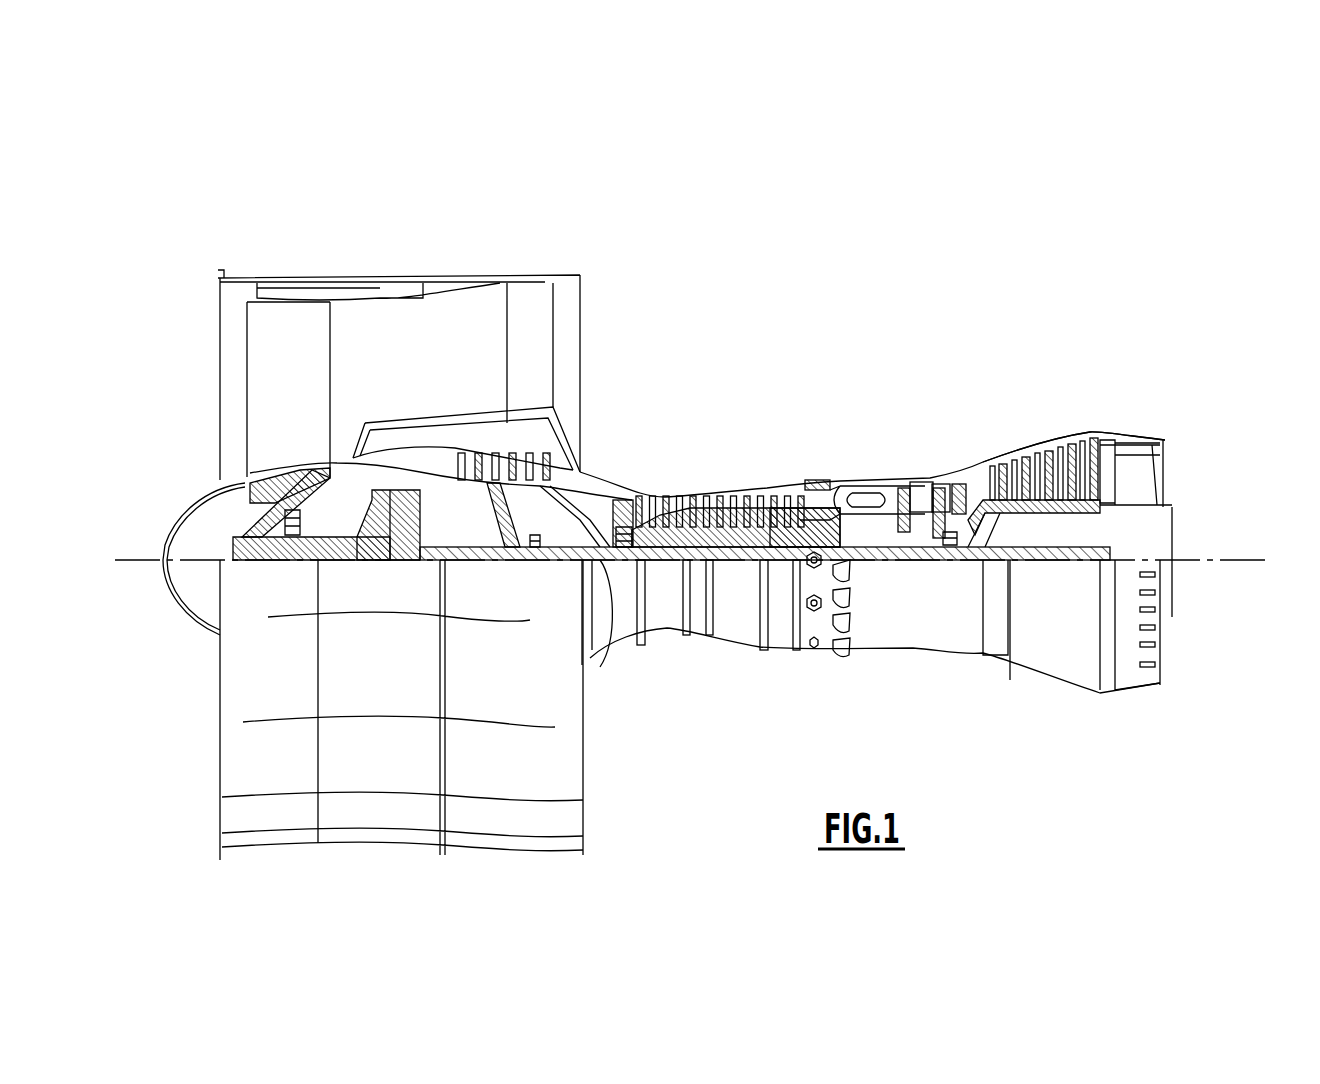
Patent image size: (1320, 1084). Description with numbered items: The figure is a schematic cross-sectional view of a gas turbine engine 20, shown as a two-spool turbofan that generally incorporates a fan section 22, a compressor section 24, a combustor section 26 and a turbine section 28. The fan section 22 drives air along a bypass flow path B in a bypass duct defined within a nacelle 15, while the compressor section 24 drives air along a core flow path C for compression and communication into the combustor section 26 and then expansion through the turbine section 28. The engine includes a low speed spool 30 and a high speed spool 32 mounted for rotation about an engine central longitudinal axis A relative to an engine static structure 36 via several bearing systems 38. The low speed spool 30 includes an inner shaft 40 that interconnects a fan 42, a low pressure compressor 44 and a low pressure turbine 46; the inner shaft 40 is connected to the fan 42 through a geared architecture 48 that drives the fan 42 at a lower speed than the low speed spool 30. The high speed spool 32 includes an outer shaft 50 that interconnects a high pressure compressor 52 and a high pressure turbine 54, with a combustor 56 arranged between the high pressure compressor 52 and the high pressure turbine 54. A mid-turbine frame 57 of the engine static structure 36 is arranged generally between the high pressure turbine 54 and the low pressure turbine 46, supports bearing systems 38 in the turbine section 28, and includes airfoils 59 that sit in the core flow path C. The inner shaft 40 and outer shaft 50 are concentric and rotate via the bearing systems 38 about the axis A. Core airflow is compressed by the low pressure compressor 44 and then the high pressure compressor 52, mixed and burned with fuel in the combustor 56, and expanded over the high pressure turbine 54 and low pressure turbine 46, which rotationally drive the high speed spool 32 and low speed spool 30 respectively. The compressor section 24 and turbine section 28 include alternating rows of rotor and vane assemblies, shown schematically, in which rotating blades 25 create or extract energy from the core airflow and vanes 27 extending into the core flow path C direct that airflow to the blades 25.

The nacelle 15 is at (400, 278).
The gas turbine engine 20 is at (860, 326).
The fan section 22 is at (328, 266).
The compressor section 24 is at (634, 462).
The rotating blades 25 is at (462, 466).
The combustor section 26 is at (855, 455).
The vanes 27 is at (479, 462).
The turbine section 28 is at (1000, 420).
The low speed spool 30 is at (738, 565).
The high speed spool 32 is at (780, 525).
The engine static structure 36 is at (780, 648).
The bearing systems 38 is at (535, 560).
The inner shaft 40 is at (610, 640).
The fan 42 is at (272, 407).
The low pressure compressor 44 is at (498, 470).
The low pressure turbine 46 is at (1060, 440).
The geared architecture 48 is at (398, 560).
The outer shaft 50 is at (868, 547).
The high pressure compressor 52 is at (700, 530).
The high pressure turbine 54 is at (940, 486).
The combustor 56 is at (856, 500).
The mid-turbine frame 57 is at (958, 460).
The airfoils 59 is at (992, 518).
The engine central longitudinal axis A is at (1248, 560).
The bypass flow path B is at (362, 351).
The core flow path C is at (405, 457).